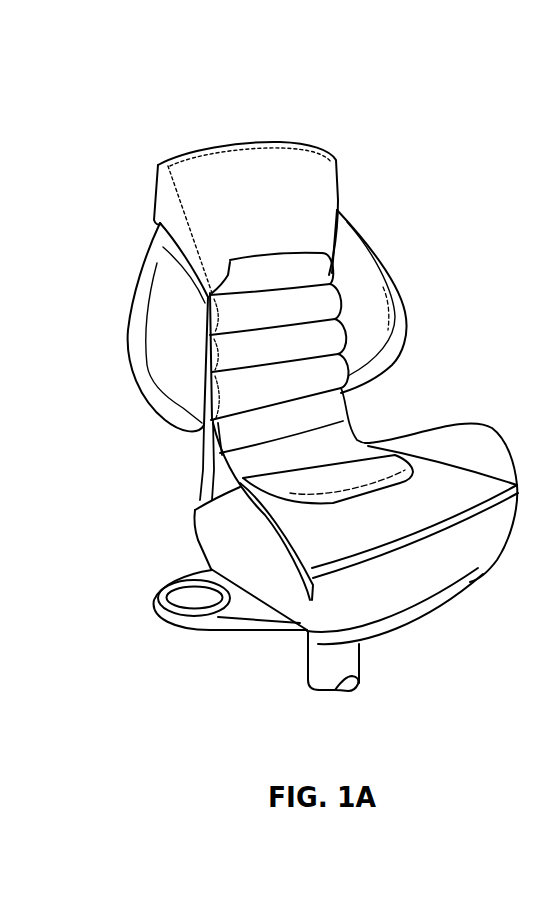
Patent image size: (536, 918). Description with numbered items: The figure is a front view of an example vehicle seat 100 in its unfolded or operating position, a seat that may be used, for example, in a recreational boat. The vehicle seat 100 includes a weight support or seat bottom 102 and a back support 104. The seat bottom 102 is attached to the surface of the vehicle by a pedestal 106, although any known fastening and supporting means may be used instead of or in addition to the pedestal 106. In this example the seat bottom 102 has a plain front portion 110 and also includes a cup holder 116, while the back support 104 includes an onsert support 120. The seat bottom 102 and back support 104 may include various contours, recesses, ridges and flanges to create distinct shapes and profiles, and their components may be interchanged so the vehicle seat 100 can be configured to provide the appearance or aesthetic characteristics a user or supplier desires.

The vehicle seat 100 is at (182, 97).
The seat bottom 102 is at (210, 538).
The back support 104 is at (383, 313).
The pedestal 106 is at (320, 658).
The plain front portion 110 is at (417, 600).
The cup holder 116 is at (238, 630).
The onsert support 120 is at (312, 300).